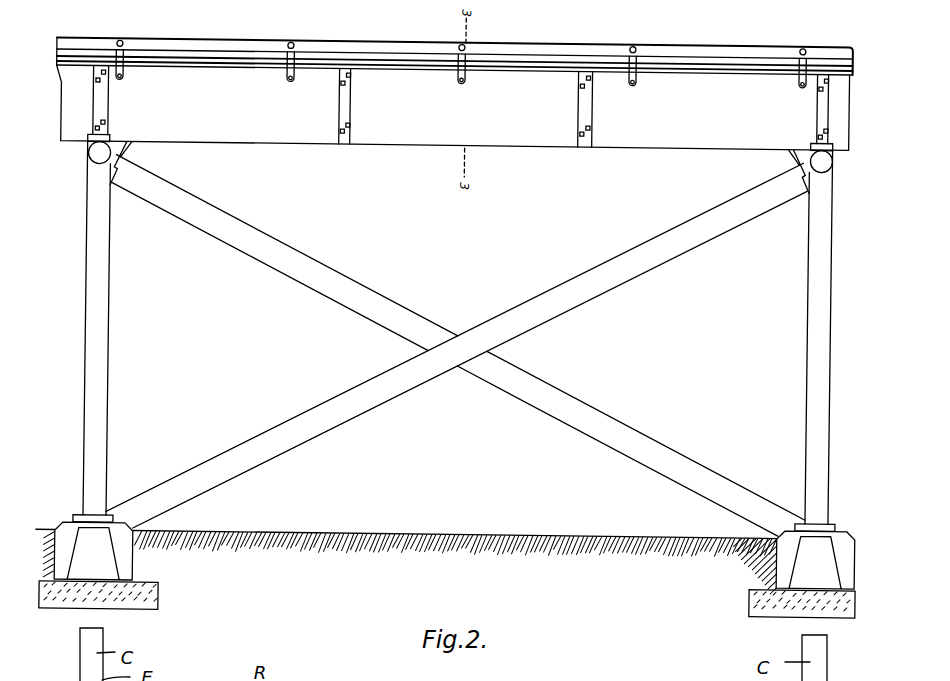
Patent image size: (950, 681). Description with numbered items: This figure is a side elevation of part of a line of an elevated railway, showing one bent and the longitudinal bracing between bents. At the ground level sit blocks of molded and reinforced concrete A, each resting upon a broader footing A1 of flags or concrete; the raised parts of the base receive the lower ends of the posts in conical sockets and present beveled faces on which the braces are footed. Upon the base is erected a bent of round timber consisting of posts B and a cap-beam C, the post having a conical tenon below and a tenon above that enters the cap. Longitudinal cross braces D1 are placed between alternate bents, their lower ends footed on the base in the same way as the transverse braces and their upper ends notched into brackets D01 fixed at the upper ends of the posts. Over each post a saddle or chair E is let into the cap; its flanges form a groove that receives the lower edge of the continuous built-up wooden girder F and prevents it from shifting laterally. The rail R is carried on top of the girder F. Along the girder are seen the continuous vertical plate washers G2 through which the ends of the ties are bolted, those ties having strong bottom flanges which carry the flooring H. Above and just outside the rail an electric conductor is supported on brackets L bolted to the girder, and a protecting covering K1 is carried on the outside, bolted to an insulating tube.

The block of molded and reinforced concrete A is at (107, 552).
The footing A1 is at (150, 597).
The post B is at (103, 293).
The cap-beam C is at (95, 151).
The cross brace D1 is at (366, 293).
The bracket D01 is at (123, 151).
The saddle or chair E is at (114, 134).
The girder F is at (453, 107).
The vertical plate washer G2 is at (109, 105).
The protecting covering K1 is at (397, 28).
The bracket L is at (288, 75).
The rail R is at (525, 57).
The flooring H is at (370, 669).